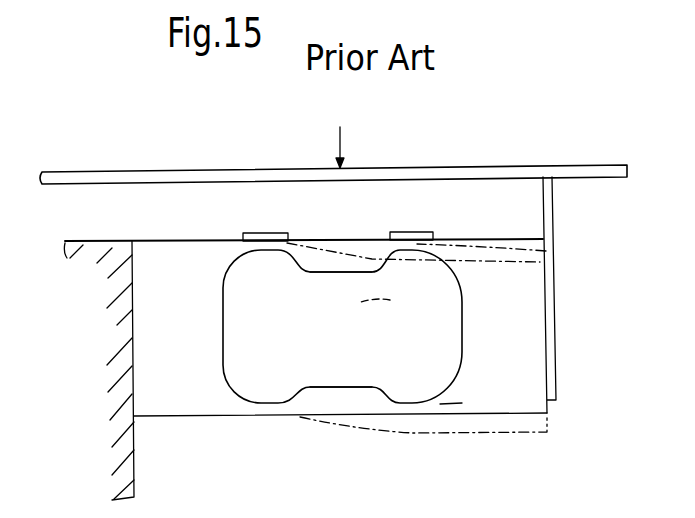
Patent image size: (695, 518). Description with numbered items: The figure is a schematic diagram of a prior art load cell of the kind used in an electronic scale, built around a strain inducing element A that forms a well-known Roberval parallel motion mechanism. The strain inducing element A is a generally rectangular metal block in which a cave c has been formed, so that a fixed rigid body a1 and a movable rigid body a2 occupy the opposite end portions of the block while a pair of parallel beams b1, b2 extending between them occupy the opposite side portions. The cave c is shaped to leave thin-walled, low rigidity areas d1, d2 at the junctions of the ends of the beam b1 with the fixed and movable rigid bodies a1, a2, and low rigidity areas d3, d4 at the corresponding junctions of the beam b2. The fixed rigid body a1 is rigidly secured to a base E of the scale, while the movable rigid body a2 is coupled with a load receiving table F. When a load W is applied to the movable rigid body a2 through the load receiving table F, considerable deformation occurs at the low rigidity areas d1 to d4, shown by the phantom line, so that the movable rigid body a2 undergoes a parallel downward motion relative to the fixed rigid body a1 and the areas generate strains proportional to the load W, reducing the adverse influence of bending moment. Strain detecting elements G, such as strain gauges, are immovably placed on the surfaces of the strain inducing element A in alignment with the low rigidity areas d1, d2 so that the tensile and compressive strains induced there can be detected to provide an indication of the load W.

The load W is at (337, 133).
The load receiving table F is at (465, 167).
The base E is at (64, 241).
The strain detecting elements G is at (251, 232).
The strain inducing element A is at (337, 402).
The parallel beam b1 is at (340, 241).
The parallel beam b2 is at (378, 405).
The cave c is at (384, 304).
The fixed rigid body a1 is at (147, 337).
The movable rigid body a2 is at (530, 322).
The low rigidity area d1 is at (262, 245).
The low rigidity area d2 is at (546, 251).
The low rigidity area d3 is at (268, 412).
The low rigidity area d4 is at (425, 408).